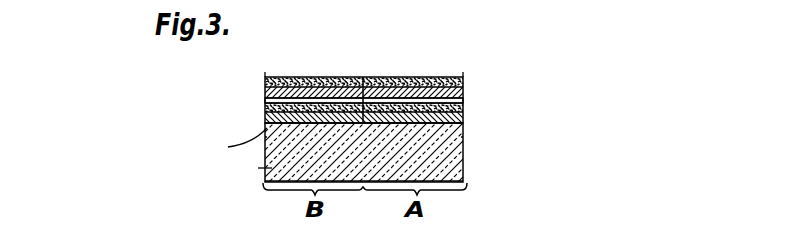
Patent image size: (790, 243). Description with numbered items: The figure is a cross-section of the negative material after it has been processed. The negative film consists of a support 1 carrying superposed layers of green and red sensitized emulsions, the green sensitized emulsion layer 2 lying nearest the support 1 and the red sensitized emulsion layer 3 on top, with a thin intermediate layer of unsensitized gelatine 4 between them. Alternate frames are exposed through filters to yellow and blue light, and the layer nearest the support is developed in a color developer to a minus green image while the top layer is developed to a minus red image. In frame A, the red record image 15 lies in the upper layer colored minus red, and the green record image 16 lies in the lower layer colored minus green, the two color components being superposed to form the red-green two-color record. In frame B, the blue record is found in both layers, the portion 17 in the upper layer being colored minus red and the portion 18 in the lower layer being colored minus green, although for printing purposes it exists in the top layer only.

The support 1 is at (463, 172).
The green sensitized emulsion layer 2 is at (463, 113).
The red sensitized emulsion layer 3 is at (364, 77).
The intermediate layer of unsensitized gelatine 4 is at (265, 103).
The red record image 15 is at (395, 78).
The green record image 16 is at (463, 137).
The upper portion of blue record image 17 is at (265, 83).
The lower portion of blue record image 18 is at (258, 168).